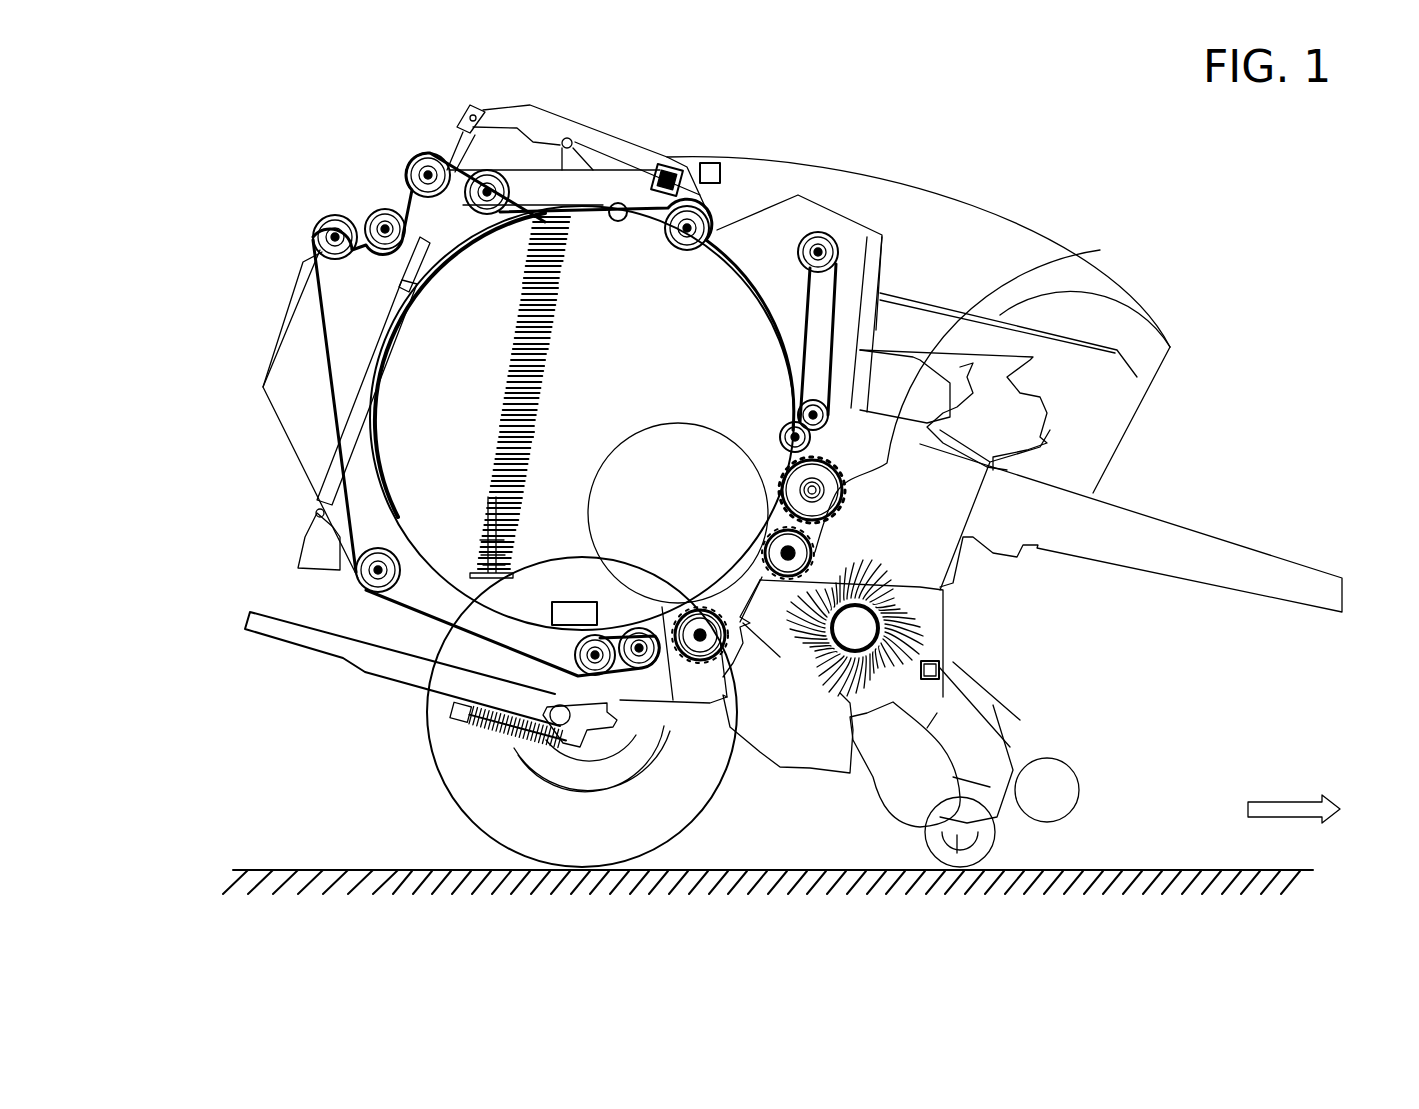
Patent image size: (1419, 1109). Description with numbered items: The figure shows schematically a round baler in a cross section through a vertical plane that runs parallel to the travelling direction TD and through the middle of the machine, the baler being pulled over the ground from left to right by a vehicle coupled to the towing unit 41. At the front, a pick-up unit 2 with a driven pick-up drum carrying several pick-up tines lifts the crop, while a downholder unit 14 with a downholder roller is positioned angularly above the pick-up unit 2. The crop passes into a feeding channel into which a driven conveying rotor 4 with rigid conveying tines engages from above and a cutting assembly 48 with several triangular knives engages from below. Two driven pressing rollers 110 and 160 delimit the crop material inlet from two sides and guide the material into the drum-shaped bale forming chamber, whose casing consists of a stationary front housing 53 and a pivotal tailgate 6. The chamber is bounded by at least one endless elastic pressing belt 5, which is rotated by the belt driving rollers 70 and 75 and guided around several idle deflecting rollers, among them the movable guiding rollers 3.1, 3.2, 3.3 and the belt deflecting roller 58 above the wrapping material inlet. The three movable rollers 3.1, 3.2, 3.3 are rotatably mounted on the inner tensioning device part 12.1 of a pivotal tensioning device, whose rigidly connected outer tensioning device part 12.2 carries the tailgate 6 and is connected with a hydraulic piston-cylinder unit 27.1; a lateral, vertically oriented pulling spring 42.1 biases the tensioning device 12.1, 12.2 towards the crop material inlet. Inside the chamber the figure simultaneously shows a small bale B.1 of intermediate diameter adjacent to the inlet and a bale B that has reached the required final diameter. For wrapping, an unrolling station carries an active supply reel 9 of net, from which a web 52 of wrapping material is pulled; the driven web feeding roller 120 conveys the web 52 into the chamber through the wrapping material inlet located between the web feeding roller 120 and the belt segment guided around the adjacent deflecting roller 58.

The pick-up unit 2 is at (908, 795).
The movable guiding roller 3.1 is at (372, 223).
The movable guiding roller 3.2 is at (473, 182).
The movable guiding roller 3.3 is at (687, 212).
The conveying rotor 4 is at (943, 633).
The pressing belt 5 is at (618, 212).
The tailgate 6 is at (286, 350).
The supply reel 9 is at (1040, 397).
The inner tensioning device part 12.1 is at (597, 190).
The outer tensioning device part 12.2 is at (592, 137).
The downholder unit 14 is at (1047, 760).
The hydraulic piston-cylinder unit 27.1 is at (325, 488).
The towing unit 41 is at (1267, 576).
The pulling spring 42.1 is at (410, 555).
The cutting assembly 48 is at (815, 752).
The web of wrapping material 52 is at (1172, 345).
The front housing 53 is at (930, 545).
The belt deflecting roller 58 is at (790, 432).
The belt driving roller 70 is at (822, 478).
The belt driving roller 75 is at (800, 553).
The pressing roller 110 is at (700, 652).
The web feeding roller 120 is at (993, 357).
The pressing roller 160 is at (898, 630).
The completed bale B is at (578, 445).
The intermediate bale B.1 is at (656, 552).
The travelling direction TD is at (1280, 797).